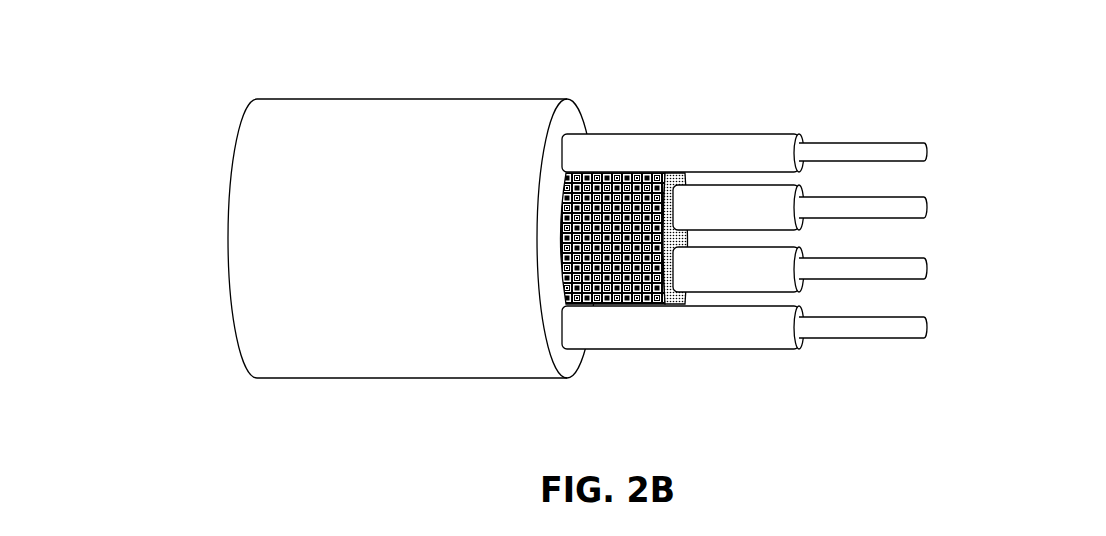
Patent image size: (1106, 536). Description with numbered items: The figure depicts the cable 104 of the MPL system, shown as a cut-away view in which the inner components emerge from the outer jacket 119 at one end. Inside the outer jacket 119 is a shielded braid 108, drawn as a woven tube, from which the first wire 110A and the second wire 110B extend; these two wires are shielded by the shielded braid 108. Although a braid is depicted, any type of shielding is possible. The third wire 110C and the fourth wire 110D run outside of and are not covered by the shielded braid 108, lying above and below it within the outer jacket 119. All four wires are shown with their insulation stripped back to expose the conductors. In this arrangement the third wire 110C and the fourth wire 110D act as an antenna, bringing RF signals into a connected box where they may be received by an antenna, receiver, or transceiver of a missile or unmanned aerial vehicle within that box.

The cable 104 is at (652, 258).
The shielded braid 108 is at (631, 292).
The first wire 110A is at (928, 208).
The second wire 110B is at (928, 269).
The third wire 110C is at (928, 152).
The fourth wire 110D is at (928, 328).
The outer jacket 119 is at (428, 378).